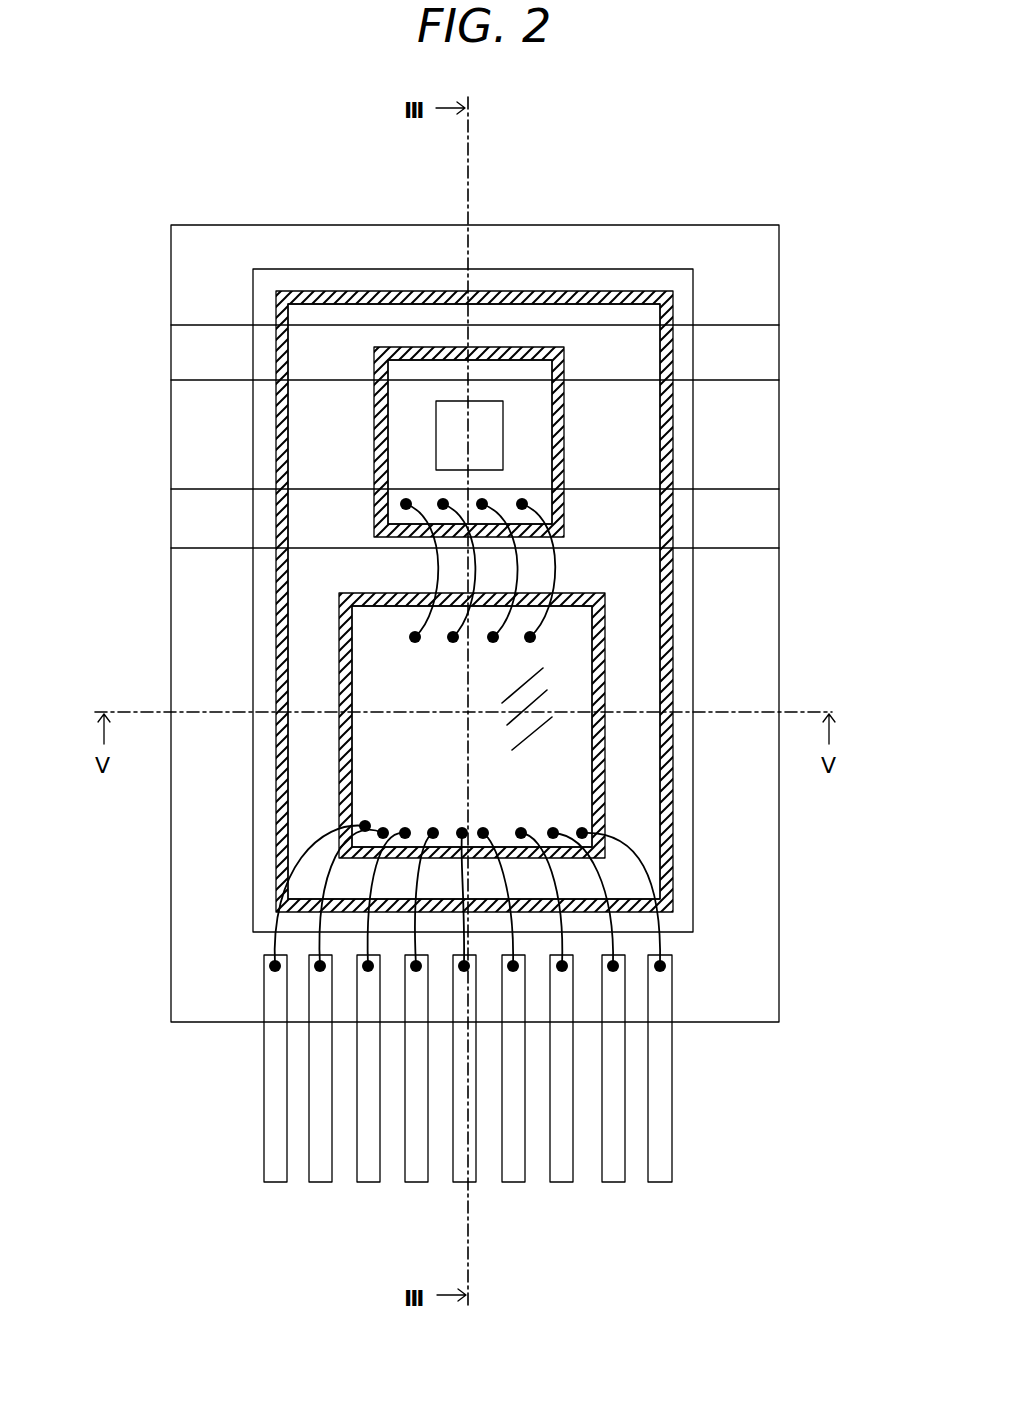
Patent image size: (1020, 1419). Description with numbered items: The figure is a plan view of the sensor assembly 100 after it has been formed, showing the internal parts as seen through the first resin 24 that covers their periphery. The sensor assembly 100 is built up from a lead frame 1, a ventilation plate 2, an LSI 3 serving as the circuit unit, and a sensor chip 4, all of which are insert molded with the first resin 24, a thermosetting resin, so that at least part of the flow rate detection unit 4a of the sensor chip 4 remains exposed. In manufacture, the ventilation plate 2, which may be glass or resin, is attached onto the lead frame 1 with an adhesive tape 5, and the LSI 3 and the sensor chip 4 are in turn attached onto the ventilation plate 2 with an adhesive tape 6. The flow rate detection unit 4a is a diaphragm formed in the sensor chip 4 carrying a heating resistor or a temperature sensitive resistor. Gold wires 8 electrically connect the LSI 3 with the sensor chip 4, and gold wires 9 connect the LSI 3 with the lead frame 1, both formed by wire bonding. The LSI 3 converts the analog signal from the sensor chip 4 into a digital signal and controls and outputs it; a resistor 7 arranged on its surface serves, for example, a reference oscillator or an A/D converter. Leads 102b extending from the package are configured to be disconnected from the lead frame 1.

The sensor assembly 100 is at (753, 175).
The first resin 24 is at (741, 278).
The lead frame 1 is at (698, 361).
The ventilation plate 2 is at (617, 435).
The LSI 3 is at (582, 653).
The sensor chip 4 is at (418, 432).
The flow rate detection unit 4a is at (508, 428).
The adhesive tape 5 is at (280, 590).
The adhesive tape 6 is at (372, 361).
The resistor 7 is at (523, 740).
The gold wire 8 is at (556, 576).
The gold wire 9 is at (305, 863).
The lead 102b is at (672, 1078).